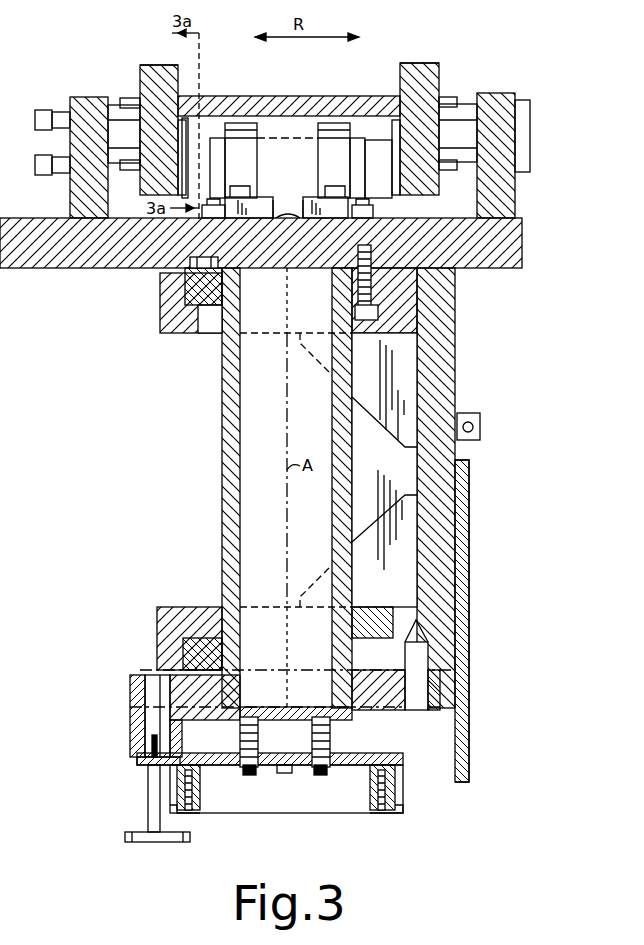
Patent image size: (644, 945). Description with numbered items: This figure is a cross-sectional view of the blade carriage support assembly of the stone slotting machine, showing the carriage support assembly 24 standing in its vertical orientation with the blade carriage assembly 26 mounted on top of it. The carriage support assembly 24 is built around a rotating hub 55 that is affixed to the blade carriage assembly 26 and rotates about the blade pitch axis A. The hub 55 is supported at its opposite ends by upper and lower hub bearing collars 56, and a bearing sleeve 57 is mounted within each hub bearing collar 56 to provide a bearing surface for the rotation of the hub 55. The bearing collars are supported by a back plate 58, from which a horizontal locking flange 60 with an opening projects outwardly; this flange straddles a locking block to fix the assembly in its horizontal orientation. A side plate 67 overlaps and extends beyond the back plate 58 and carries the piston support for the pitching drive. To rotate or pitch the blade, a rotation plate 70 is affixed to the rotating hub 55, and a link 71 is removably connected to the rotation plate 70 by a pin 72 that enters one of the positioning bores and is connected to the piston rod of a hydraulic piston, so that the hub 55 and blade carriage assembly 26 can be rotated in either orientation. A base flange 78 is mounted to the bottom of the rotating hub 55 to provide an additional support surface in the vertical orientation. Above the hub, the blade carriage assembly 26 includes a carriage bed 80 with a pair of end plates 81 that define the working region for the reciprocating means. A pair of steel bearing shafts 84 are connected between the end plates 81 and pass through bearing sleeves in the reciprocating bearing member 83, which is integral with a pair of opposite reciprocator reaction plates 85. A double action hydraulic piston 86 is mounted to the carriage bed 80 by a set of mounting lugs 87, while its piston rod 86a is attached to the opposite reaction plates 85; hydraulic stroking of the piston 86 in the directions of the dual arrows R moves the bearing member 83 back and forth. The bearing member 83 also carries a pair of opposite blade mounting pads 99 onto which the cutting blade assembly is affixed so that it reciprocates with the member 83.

The carriage support assembly 24 is at (470, 470).
The blade carriage assembly 26 is at (519, 202).
The rotating hub 55 is at (222, 458).
The hub bearing collar 56 is at (160, 300).
The bearing sleeve 57 is at (212, 308).
The back plate 58 is at (440, 350).
The horizontal locking flange 60 is at (480, 418).
The side plate 67 is at (463, 690).
The rotation plate 70 is at (398, 703).
The link 71 is at (130, 742).
The pin 72 is at (150, 760).
The base flange 78 is at (390, 813).
The carriage bed 80 is at (520, 236).
The end plate 81 is at (76, 97).
The reciprocating bearing member 83 is at (320, 96).
The bearing shaft 84 is at (114, 105).
The reciprocator reaction plate 85 is at (150, 65).
The double action hydraulic piston 86 is at (233, 116).
The piston rod 86a is at (378, 150).
The mounting lug 87 is at (284, 200).
The blade mounting pad 99 is at (150, 65).